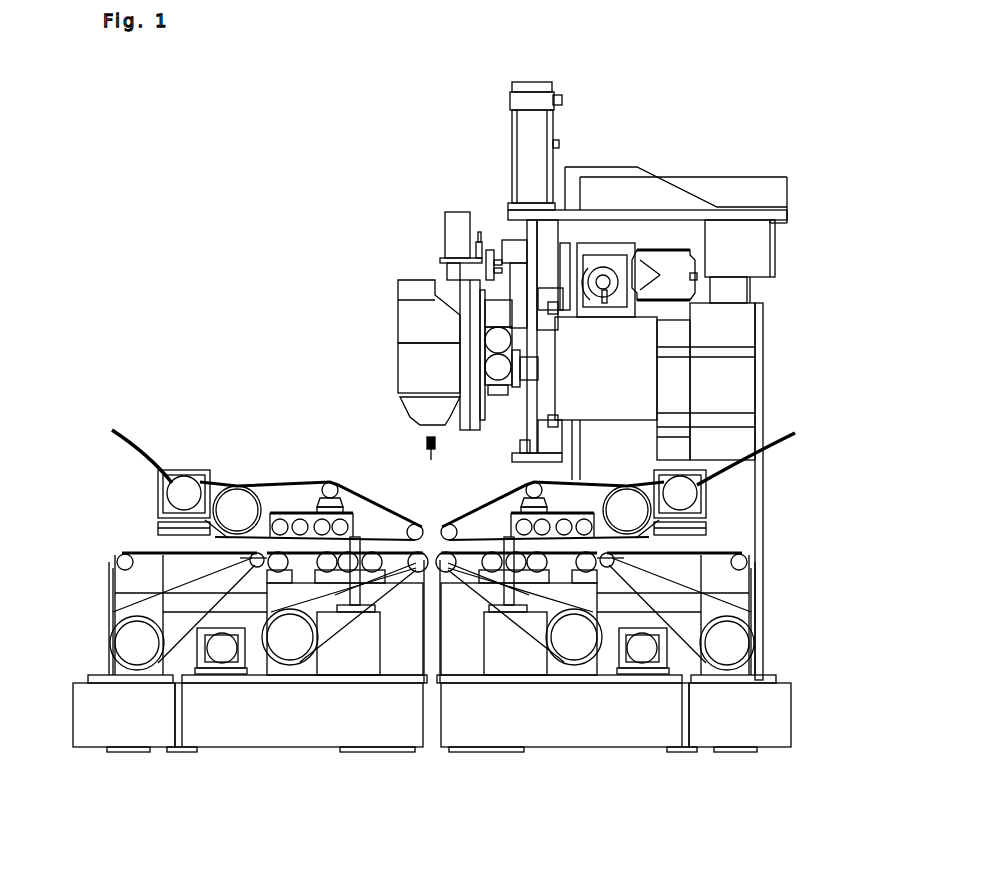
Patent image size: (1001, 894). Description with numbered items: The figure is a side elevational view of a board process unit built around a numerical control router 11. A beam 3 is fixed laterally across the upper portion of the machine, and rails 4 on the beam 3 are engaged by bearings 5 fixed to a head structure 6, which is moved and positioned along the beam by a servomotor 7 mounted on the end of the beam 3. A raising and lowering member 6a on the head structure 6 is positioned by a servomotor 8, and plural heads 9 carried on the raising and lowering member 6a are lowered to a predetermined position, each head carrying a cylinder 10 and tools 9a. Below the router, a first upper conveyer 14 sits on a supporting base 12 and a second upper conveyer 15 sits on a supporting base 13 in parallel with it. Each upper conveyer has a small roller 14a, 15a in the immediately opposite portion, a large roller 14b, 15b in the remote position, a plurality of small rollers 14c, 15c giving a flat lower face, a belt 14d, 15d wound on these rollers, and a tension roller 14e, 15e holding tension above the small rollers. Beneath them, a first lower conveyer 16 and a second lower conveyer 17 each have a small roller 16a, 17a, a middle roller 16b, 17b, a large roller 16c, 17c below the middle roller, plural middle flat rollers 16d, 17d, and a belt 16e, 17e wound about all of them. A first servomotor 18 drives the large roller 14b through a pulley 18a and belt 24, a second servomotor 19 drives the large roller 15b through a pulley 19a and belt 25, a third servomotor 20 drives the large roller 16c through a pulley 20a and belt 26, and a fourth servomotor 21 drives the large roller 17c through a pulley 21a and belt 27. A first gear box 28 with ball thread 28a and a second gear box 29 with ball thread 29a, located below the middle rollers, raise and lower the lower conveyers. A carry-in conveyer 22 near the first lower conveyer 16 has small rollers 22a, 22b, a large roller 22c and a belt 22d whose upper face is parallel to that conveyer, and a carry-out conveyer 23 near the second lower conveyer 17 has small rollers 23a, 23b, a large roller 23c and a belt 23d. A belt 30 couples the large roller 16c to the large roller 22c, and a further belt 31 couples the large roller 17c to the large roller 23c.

The beam 3 is at (640, 332).
The rails 4 is at (557, 318).
The bearings 5 is at (552, 290).
The head structure 6 is at (485, 208).
The raising and lowering member 6a is at (528, 372).
The servomotor 7 is at (656, 268).
The servomotor 8 is at (533, 80).
The heads 9 is at (408, 332).
The tools 9a is at (427, 455).
The cylinder 10 is at (450, 218).
The numerical control router 11 is at (415, 230).
The supporting base 12 is at (132, 605).
The supporting base 13 is at (730, 608).
The first upper conveyer 14 is at (303, 495).
The small roller 14a is at (413, 522).
The large roller 14b is at (237, 500).
The small rollers 14c is at (300, 525).
The belt 14d is at (358, 490).
The tension roller 14e is at (331, 482).
The second upper conveyer 15 is at (645, 530).
The small roller 15a is at (451, 522).
The large roller 15b is at (618, 493).
The small rollers 15c is at (573, 507).
The belt 15d is at (597, 505).
The tension roller 15e is at (527, 490).
The first lower conveyer 16 is at (290, 645).
The small roller 16a is at (416, 570).
The middle roller 16b is at (272, 582).
The large roller 16c is at (278, 567).
The middle flat rollers 16d is at (330, 572).
The belt 16e is at (113, 593).
The second lower conveyer 17 is at (570, 648).
The small roller 17a is at (445, 572).
The middle roller 17b is at (592, 582).
The large roller 17c is at (586, 572).
The middle flat rollers 17d is at (533, 572).
The belt 17e is at (597, 602).
The first servomotor 18 is at (182, 487).
The pulley 18a is at (111, 439).
The second servomotor 19 is at (690, 497).
The pulley 19a is at (771, 451).
The third servomotor 20 is at (177, 750).
The pulley 20a is at (218, 760).
The fourth servomotor 21 is at (657, 745).
The pulley 21a is at (673, 722).
The carry-in conveyer 22 is at (152, 565).
The small roller 22a is at (252, 561).
The small roller 22b is at (118, 550).
The large roller 22c is at (132, 647).
The belt 22d is at (112, 576).
The carry-out conveyer 23 is at (725, 683).
The small roller 23a is at (612, 561).
The small roller 23b is at (745, 563).
The large roller 23c is at (735, 648).
The belt 23d is at (752, 580).
The belt 24 is at (217, 480).
The belt 25 is at (632, 510).
The belt 26 is at (245, 678).
The belt 27 is at (642, 652).
The first gear box 28 is at (370, 707).
The ball thread 28a is at (370, 731).
The second gear box 29 is at (485, 667).
The ball thread 29a is at (502, 688).
The belt 30 is at (162, 686).
The right table 31 is at (697, 687).